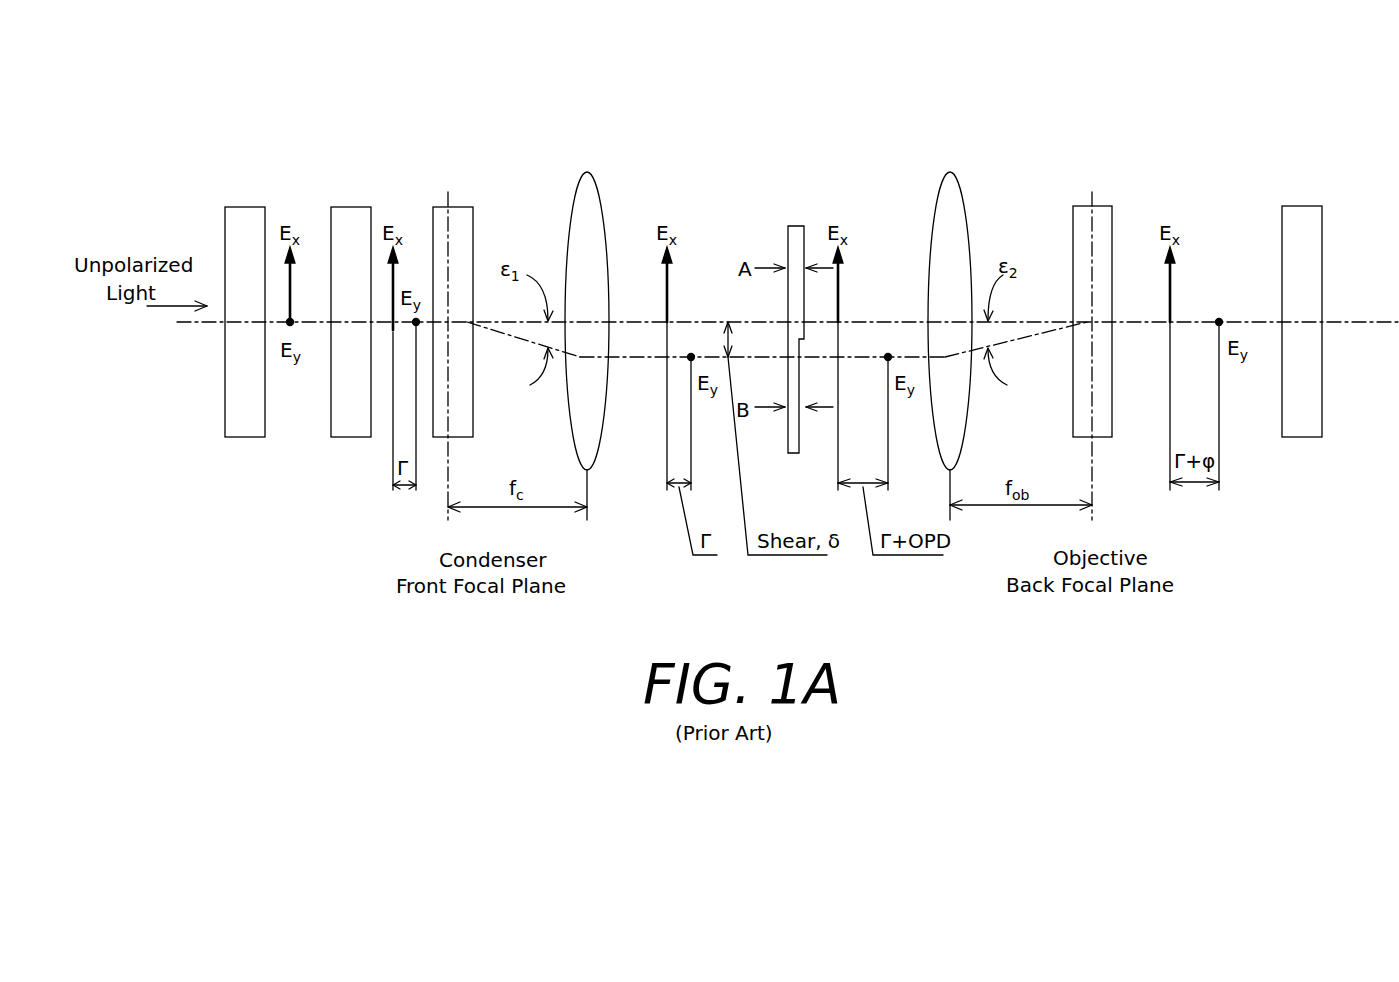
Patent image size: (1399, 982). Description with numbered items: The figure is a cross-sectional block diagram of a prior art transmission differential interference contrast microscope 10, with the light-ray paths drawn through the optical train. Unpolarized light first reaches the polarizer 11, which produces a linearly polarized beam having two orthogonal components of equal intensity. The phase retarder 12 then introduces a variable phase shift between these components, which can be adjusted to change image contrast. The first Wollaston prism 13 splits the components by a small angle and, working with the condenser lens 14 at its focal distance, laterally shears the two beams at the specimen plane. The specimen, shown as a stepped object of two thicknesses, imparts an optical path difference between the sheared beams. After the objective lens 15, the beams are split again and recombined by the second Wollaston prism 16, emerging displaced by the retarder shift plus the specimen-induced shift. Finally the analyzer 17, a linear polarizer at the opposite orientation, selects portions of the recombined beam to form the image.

The transmission DIC microscope 10 is at (1066, 104).
The polarizer 11 is at (237, 438).
The phase retarder 12 is at (342, 438).
The first Wollaston prism 13 is at (473, 427).
The condenser lens 14 is at (597, 186).
The objective lens 15 is at (940, 189).
The second Wollaston prism 16 is at (1073, 232).
The analyzer 17 is at (1323, 286).